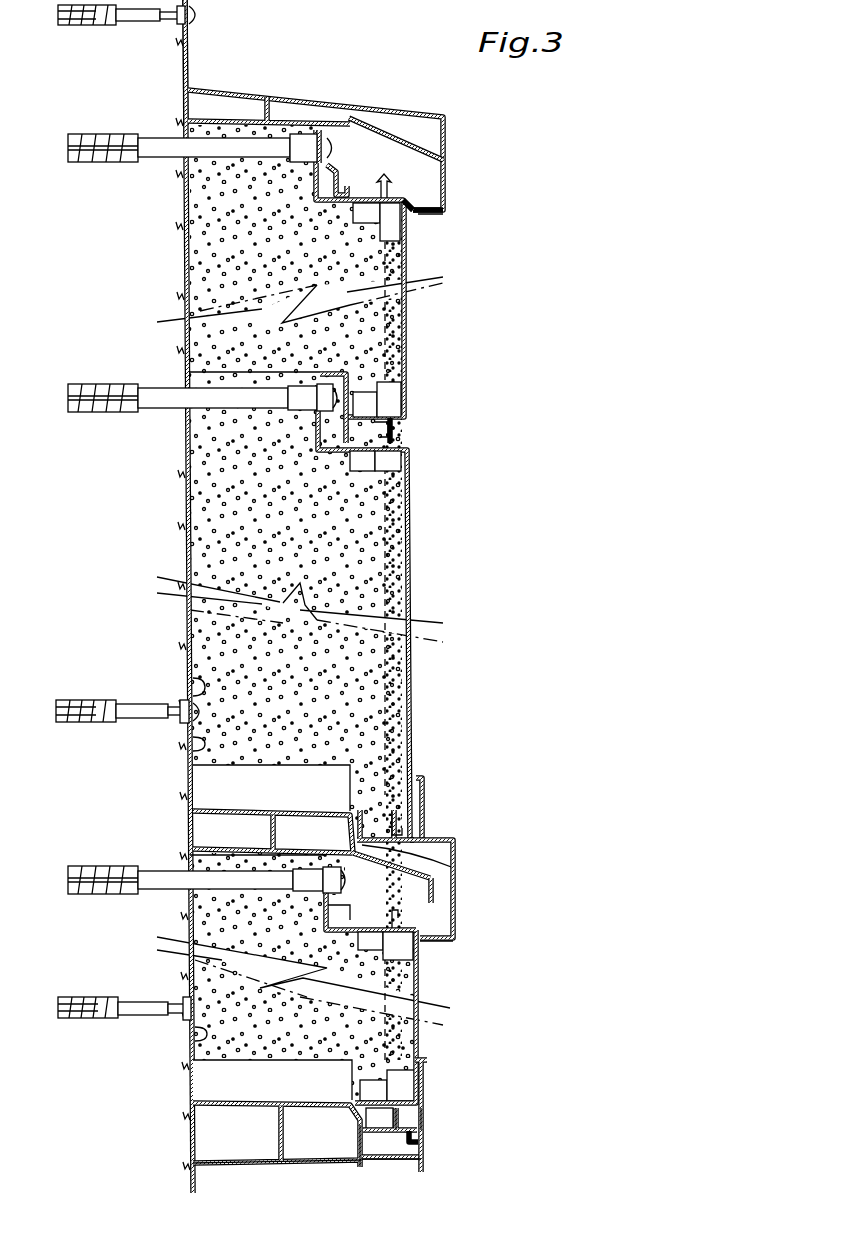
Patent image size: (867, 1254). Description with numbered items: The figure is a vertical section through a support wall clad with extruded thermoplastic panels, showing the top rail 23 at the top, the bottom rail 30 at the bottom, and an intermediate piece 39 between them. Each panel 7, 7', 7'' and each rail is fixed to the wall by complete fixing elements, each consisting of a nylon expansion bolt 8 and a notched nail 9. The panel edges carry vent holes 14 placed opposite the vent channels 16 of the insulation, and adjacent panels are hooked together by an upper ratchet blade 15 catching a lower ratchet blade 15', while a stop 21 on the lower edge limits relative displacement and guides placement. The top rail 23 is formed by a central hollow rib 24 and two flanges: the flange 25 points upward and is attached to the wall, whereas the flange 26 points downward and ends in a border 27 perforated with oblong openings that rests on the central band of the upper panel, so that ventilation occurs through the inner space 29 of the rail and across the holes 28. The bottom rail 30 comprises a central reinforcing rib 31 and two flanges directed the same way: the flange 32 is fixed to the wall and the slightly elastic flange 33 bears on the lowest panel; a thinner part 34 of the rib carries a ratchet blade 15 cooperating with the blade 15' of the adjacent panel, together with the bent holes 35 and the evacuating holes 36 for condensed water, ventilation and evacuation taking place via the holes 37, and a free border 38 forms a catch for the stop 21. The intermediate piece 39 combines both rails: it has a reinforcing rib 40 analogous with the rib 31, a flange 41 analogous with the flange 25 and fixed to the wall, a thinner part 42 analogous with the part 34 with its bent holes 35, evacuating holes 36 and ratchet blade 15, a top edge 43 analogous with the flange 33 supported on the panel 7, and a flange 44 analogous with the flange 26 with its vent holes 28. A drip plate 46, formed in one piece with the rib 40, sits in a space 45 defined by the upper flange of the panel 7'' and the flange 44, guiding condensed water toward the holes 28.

The panel 7 is at (387, 606).
The adjacent panel 7' is at (390, 273).
The adjacent panel 7'' is at (430, 1016).
The nylon expansion bolt 8 is at (130, 20).
The notched nail 9 is at (190, 30).
The vent holes 14 is at (377, 1102).
The upper ratchet blade 15 is at (421, 954).
The lower ratchet blade 15' is at (382, 1158).
The vent channels 16 is at (352, 215).
The stop 21 is at (353, 1106).
The top rail 23 is at (458, 167).
The central hollow rib 24 is at (287, 100).
The flange 25 is at (183, 66).
The flange 26 is at (447, 197).
The border 27 is at (412, 212).
The holes 28 is at (428, 214).
The inner space 29 is at (373, 148).
The bottom rail 30 is at (438, 1163).
The central reinforcing rib 31 is at (220, 1100).
The flange 32 is at (200, 1033).
The flange 33 is at (424, 1120).
The thinner part 34 is at (408, 1163).
The bent holes 35 is at (415, 866).
The evacuating holes 36 is at (418, 837).
The holes 37 is at (363, 1165).
The free border 38 is at (287, 1166).
The intermediate piece 39 is at (467, 937).
The reinforcing rib 40 is at (217, 810).
The flange 41 is at (197, 747).
The thinner part 42 is at (455, 848).
The top edge 43 is at (423, 778).
The flange 44 is at (455, 917).
The space 45 is at (340, 899).
The drip plate 46 is at (431, 897).